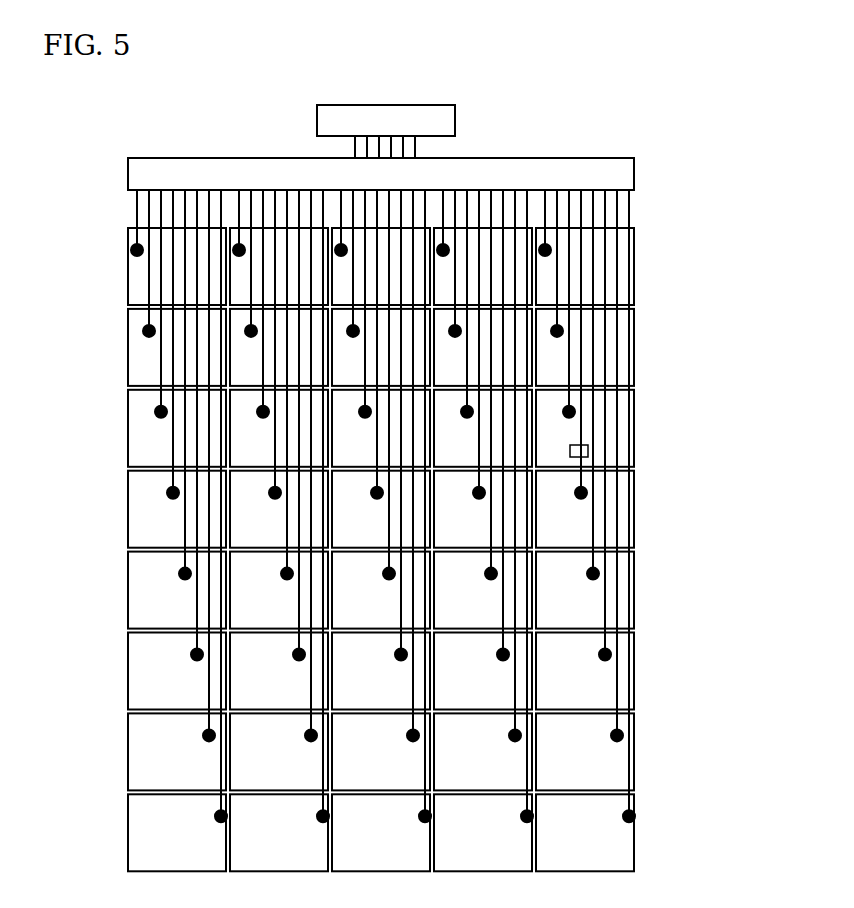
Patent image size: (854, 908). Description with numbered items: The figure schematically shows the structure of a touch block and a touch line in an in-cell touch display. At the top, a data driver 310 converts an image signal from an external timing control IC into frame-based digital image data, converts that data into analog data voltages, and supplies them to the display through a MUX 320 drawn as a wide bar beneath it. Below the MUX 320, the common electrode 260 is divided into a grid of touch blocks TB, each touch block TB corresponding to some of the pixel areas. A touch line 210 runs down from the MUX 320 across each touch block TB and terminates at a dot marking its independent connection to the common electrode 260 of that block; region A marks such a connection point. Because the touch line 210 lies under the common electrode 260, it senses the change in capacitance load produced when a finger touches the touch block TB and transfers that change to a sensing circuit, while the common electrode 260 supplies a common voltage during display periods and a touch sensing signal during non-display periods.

The data driver 310 is at (440, 121).
The MUX 320 is at (622, 175).
The touch block TB is at (643, 228).
The touch line 210 is at (580, 430).
The region A is at (590, 452).
The common electrode 260 is at (555, 476).